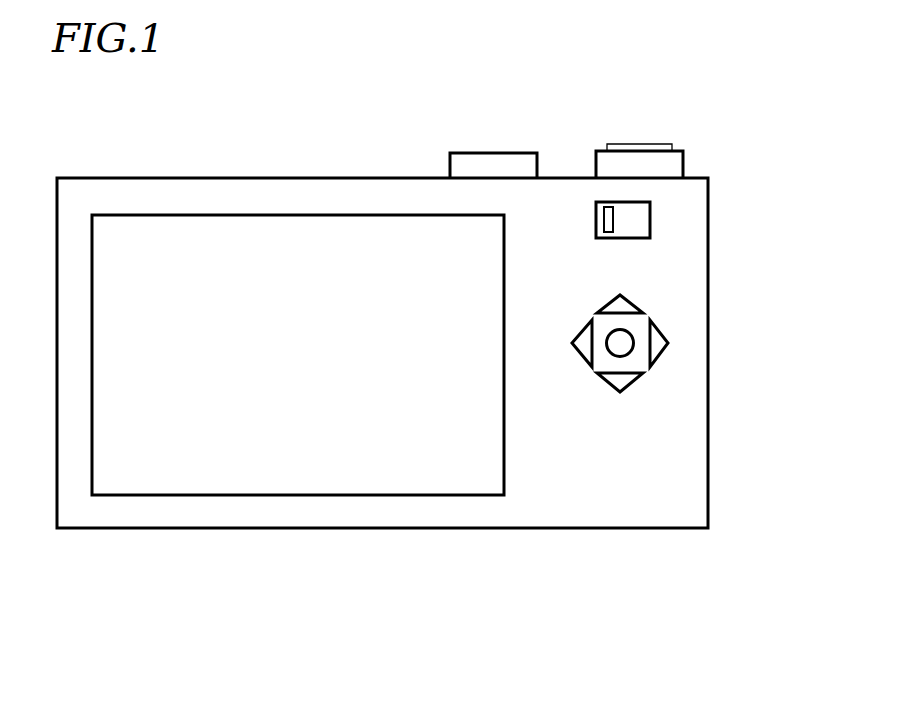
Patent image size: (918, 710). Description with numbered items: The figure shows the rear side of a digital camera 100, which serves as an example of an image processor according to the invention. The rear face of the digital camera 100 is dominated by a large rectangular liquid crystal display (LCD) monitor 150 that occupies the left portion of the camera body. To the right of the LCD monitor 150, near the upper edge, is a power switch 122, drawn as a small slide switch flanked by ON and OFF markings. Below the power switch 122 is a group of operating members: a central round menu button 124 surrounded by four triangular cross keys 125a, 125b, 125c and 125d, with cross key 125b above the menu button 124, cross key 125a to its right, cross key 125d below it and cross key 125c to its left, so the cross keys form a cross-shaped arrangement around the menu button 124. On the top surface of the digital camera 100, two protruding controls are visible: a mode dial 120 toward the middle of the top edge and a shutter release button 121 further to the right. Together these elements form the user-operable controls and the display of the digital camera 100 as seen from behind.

The digital camera 100 is at (364, 195).
The liquid crystal display (LCD) monitor 150 is at (172, 240).
The mode dial 120 is at (482, 170).
The shutter release button 121 is at (615, 168).
The power switch 122 is at (639, 209).
The menu button 124 is at (618, 347).
The cross key 125a is at (668, 340).
The cross key 125b is at (630, 303).
The cross key 125c is at (582, 352).
The cross key 125d is at (630, 378).